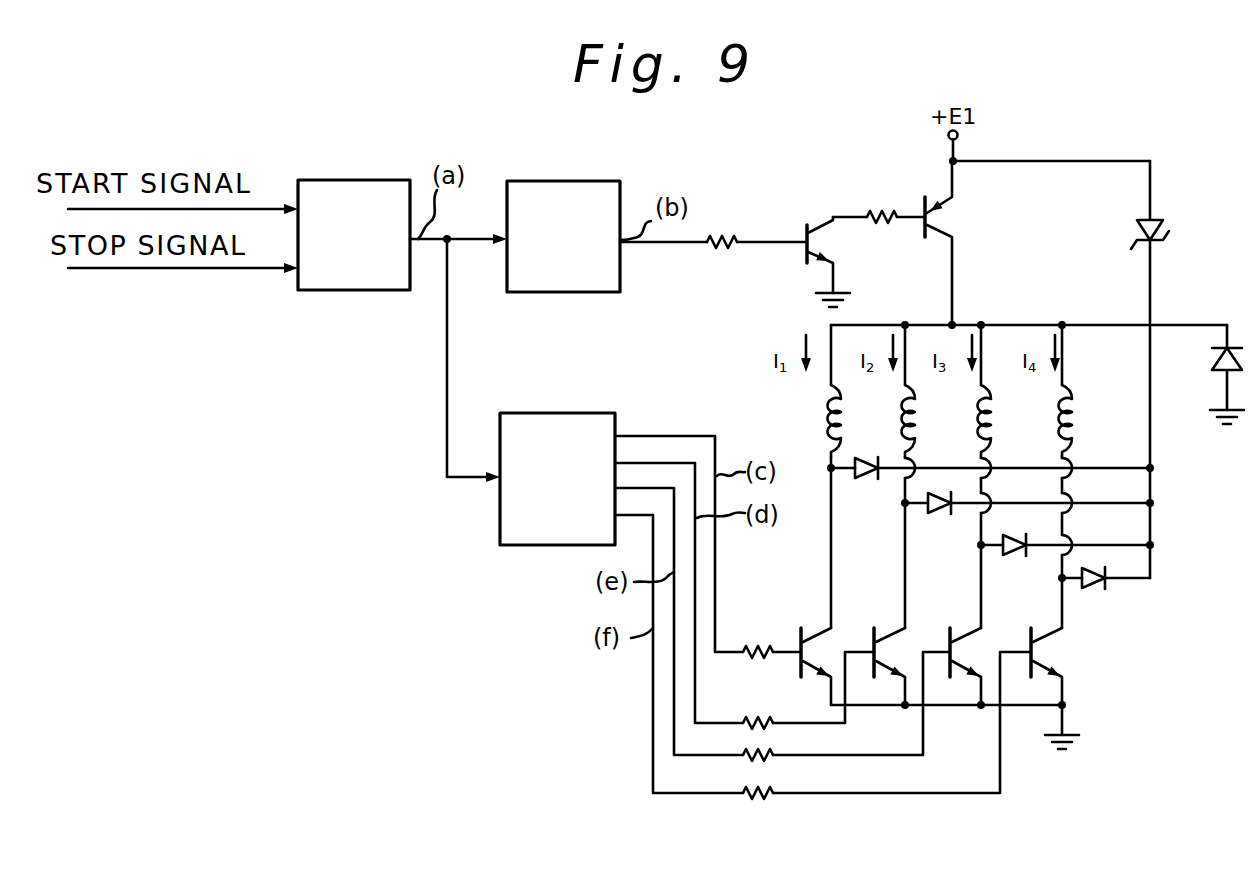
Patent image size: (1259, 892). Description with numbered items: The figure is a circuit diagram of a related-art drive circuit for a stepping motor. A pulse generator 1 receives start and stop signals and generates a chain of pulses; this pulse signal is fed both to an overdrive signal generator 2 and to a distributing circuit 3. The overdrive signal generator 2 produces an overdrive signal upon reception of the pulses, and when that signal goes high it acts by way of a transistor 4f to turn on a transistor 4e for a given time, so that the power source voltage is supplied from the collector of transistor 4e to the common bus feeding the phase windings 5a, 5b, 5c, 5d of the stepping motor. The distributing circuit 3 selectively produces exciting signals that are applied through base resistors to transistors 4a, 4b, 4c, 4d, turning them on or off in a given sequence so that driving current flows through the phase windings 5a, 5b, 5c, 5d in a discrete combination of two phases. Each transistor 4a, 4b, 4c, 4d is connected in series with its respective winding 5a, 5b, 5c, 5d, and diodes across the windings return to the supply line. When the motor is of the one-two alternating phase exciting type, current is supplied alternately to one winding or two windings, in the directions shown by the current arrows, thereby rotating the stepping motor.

The pulse generator 1 is at (355, 291).
The overdrive signal generator 2 is at (558, 293).
The distributing circuit 3 is at (540, 546).
The transistor 4a is at (795, 637).
The transistor 4b is at (868, 637).
The transistor 4c is at (944, 637).
The transistor 4d is at (1025, 637).
The transistor 4e is at (943, 219).
The transistor 4f is at (811, 227).
The phase winding 5a is at (824, 404).
The phase winding 5b is at (898, 404).
The phase winding 5c is at (974, 408).
The phase winding 5d is at (1055, 404).